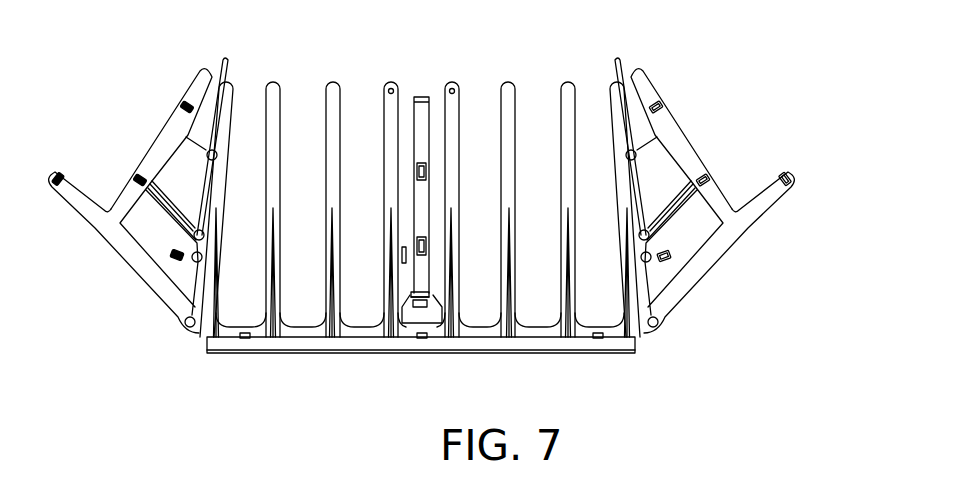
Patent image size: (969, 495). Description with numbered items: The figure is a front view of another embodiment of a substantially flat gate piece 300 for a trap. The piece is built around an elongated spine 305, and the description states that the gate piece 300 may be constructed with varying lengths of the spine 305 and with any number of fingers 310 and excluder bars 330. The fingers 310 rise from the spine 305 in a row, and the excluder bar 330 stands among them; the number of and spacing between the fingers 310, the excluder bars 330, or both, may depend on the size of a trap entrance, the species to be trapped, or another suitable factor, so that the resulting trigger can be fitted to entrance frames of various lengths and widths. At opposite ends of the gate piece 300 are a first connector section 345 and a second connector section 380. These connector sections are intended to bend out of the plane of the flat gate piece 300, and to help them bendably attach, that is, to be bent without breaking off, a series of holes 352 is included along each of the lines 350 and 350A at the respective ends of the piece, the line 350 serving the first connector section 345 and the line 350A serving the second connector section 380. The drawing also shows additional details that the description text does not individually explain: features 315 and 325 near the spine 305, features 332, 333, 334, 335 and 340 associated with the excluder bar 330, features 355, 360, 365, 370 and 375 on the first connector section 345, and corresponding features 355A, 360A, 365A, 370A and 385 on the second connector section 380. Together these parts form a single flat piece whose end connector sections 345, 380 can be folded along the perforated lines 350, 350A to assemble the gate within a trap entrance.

The substantially flat gate piece 300 is at (350, 60).
The spine 305 is at (287, 344).
The fingers 310 is at (230, 87).
The spikes 315 is at (390, 322).
The tabs 325 is at (242, 341).
The excluder bars 330 is at (418, 97).
The housing 332 is at (430, 324).
The fastener 333 is at (418, 308).
The bracket 334 is at (430, 296).
The openings 335 is at (417, 167).
The projection 340 is at (400, 253).
The first connector section 345 is at (150, 127).
The line 350 is at (207, 152).
The holes 352 is at (218, 153).
The lower arm 355 is at (142, 283).
The upper arm 360 is at (157, 150).
The intermediate member 365 is at (162, 213).
The link 370 is at (228, 52).
The pads 375 is at (183, 101).
The second connector section 380 is at (700, 97).
The line 350A is at (636, 160).
The lower arm 355A is at (705, 268).
The upper arm 360A is at (675, 125).
The intermediate member 365A is at (678, 213).
The link 370A is at (640, 137).
The pads 385 is at (660, 107).